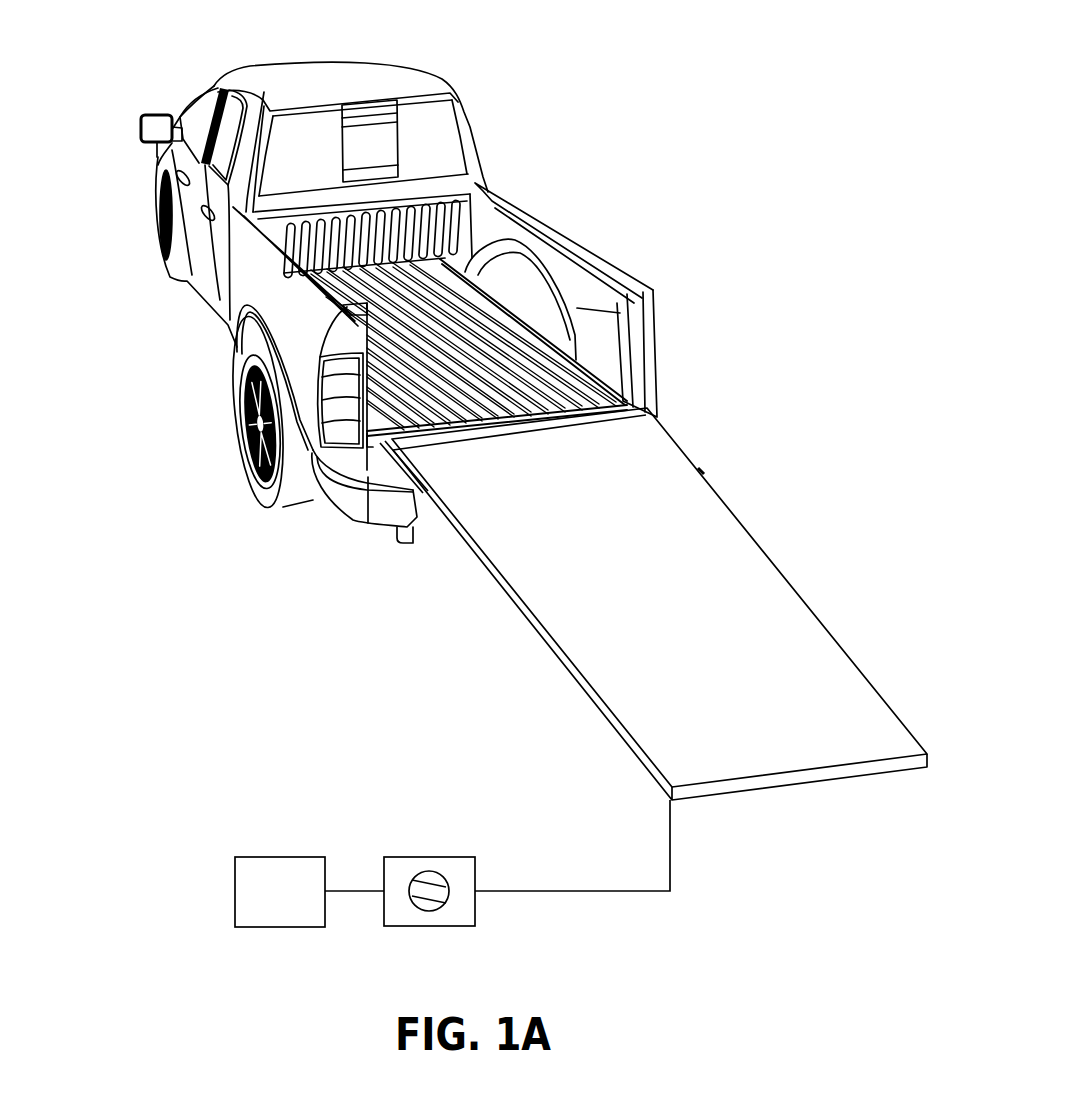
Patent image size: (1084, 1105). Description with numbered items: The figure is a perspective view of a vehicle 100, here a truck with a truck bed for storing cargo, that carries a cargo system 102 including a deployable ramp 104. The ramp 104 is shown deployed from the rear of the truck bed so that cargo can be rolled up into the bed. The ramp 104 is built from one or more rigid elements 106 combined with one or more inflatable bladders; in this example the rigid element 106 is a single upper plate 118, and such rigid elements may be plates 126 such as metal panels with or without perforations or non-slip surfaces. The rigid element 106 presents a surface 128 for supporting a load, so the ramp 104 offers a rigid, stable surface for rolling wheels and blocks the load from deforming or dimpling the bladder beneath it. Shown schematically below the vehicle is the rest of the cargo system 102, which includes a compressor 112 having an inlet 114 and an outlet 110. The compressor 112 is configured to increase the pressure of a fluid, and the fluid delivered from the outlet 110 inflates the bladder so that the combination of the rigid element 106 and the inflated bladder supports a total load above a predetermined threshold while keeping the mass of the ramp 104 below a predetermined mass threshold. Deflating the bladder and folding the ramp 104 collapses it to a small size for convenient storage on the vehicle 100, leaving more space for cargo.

The vehicle 100 is at (105, 45).
The cargo system 102 is at (928, 938).
The deployable ramp 104 is at (836, 554).
The rigid element 106 is at (698, 519).
The upper plate 118 is at (653, 604).
The plate 126 is at (653, 604).
The surface 128 is at (668, 603).
The outlet 110 is at (475, 891).
The compressor 112 is at (431, 857).
The inlet 114 is at (384, 891).